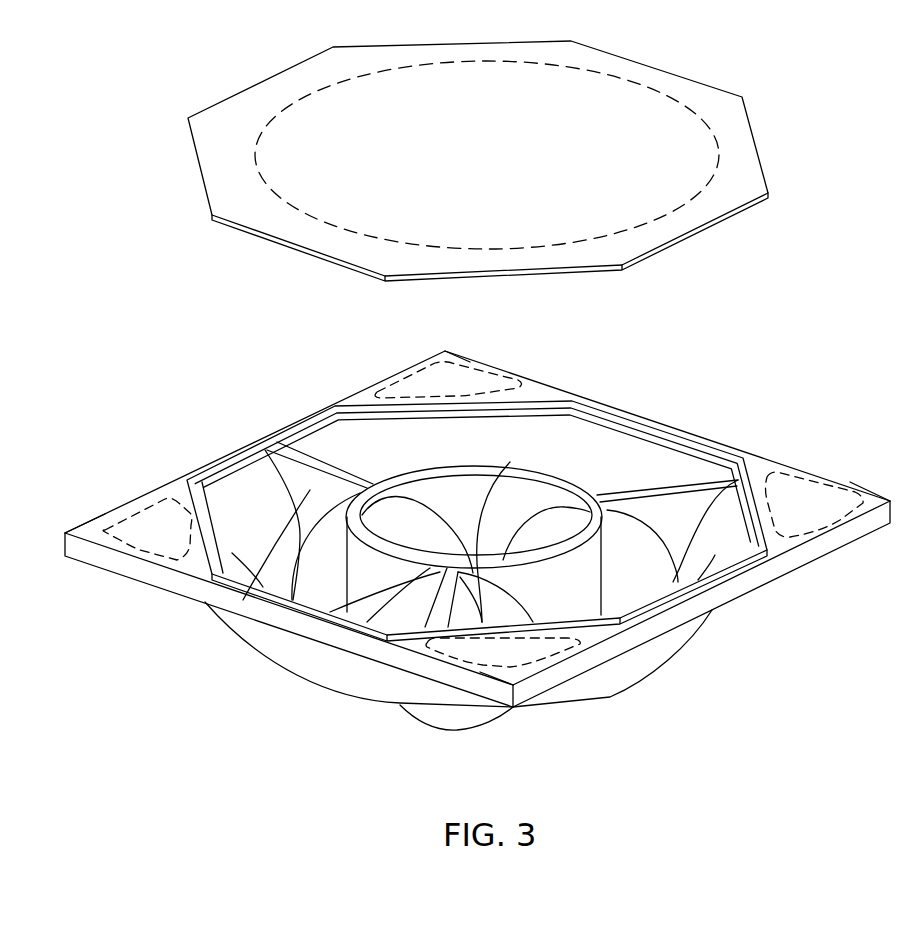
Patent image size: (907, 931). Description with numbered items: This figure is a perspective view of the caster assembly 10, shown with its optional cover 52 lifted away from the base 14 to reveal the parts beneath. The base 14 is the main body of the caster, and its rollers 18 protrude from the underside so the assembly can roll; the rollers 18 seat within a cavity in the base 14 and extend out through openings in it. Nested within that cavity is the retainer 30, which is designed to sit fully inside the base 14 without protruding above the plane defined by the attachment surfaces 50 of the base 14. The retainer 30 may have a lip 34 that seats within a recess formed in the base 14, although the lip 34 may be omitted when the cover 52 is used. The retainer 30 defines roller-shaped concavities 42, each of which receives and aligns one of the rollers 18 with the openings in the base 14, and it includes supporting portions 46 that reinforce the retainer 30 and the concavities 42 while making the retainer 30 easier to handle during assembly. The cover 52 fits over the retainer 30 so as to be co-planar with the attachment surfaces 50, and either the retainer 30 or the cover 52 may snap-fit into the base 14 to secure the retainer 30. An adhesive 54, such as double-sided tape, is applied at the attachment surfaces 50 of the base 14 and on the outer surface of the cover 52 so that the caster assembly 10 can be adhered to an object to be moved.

The caster assembly 10 is at (822, 354).
The base 14 is at (678, 646).
The rollers 18 is at (433, 727).
The retainer 30 is at (407, 435).
The lip 34 is at (287, 437).
The concavities 42 is at (403, 525).
The supporting portions 46 is at (410, 588).
The attachment surfaces 50 is at (534, 387).
The cover 52 is at (738, 148).
The adhesive 54 is at (317, 110).